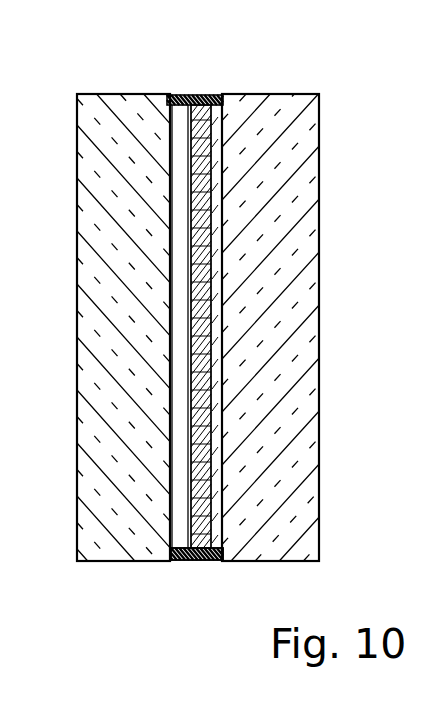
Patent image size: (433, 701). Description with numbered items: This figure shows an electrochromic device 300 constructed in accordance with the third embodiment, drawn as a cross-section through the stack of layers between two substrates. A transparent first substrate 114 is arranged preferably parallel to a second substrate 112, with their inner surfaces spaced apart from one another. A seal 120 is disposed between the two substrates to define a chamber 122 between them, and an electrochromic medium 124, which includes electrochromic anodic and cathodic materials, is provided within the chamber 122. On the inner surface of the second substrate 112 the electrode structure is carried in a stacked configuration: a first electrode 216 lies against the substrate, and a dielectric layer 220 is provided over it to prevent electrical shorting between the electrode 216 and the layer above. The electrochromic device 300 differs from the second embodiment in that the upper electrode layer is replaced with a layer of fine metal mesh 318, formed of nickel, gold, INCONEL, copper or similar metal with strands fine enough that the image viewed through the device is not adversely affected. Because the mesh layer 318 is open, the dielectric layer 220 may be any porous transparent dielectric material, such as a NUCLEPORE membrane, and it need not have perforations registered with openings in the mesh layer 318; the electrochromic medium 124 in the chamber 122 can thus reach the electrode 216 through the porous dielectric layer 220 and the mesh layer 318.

The electrochromic device 300 is at (228, 33).
The second substrate 112 is at (293, 263).
The first substrate 114 is at (115, 462).
The seal 120 is at (168, 96).
The chamber 122 is at (179, 495).
The electrochromic medium 124 is at (193, 562).
The first electrode 216 is at (213, 210).
The dielectric layer 220 is at (191, 183).
The metal mesh layer 318 is at (194, 157).